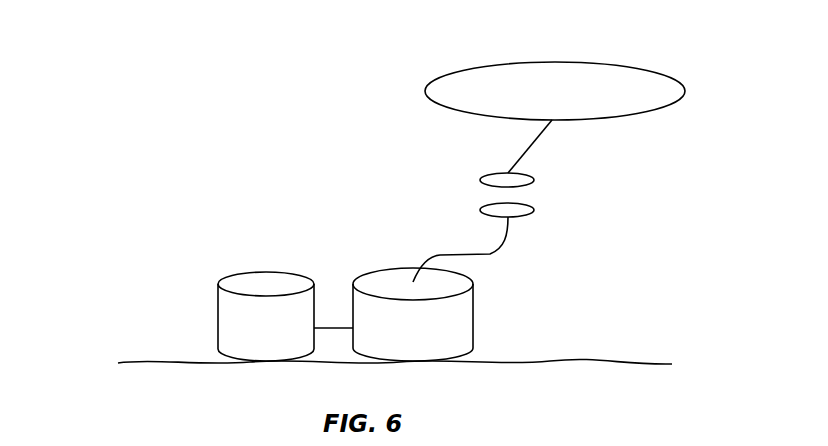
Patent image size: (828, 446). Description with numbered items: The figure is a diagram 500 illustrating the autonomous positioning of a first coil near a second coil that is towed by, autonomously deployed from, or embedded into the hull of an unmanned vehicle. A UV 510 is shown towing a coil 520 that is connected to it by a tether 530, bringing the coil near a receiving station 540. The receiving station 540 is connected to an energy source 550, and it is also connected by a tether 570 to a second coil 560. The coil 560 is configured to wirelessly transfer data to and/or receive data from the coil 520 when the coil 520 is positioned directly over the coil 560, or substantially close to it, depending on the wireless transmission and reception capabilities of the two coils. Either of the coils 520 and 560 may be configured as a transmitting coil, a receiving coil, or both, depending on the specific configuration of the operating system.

The diagram 500 is at (116, 118).
The UV 510 is at (425, 88).
The coil 520 is at (480, 180).
The tether 530 is at (536, 143).
The receiving station 540 is at (473, 310).
The energy source 550 is at (218, 315).
The coil 560 is at (533, 213).
The tether 570 is at (421, 262).